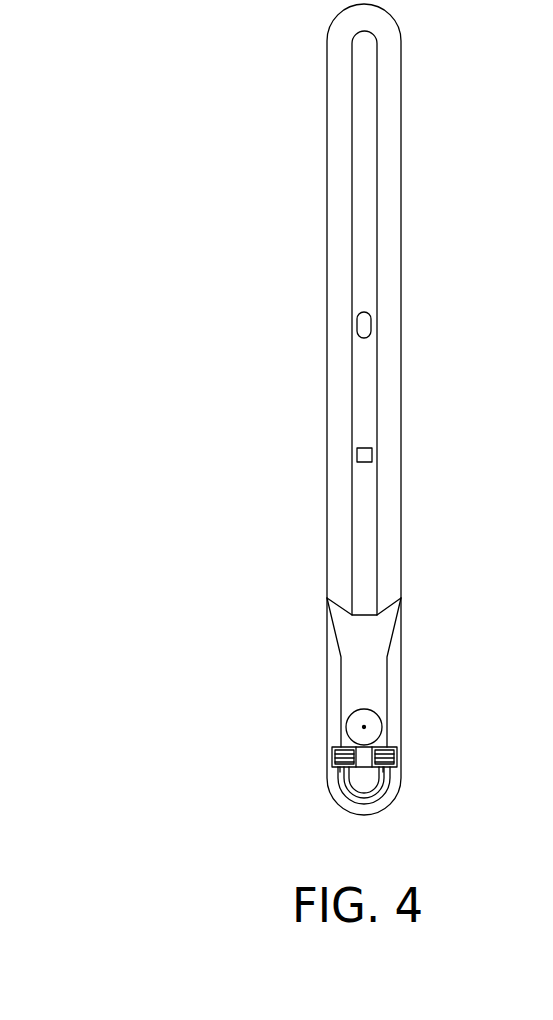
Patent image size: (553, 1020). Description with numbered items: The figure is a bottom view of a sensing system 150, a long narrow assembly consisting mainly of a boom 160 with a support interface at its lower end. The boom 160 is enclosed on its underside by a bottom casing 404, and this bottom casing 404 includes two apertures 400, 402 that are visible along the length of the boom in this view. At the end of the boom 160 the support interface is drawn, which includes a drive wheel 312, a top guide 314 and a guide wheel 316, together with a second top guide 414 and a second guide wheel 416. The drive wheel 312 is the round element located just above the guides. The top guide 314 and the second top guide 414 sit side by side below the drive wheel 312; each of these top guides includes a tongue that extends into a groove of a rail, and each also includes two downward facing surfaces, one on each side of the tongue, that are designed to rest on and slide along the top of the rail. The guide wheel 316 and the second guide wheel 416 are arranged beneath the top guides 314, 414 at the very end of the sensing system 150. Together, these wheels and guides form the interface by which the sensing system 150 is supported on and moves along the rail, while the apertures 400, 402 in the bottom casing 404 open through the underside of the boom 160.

The sensing system 150 is at (198, 775).
The boom 160 is at (318, 312).
The drive wheel 312 is at (352, 715).
The top guide 314 is at (338, 758).
The guide wheel 316 is at (340, 770).
The aperture 400 is at (368, 327).
The aperture 402 is at (368, 453).
The bottom casing 404 is at (360, 240).
The second top guide 414 is at (390, 752).
The second guide wheel 416 is at (390, 768).